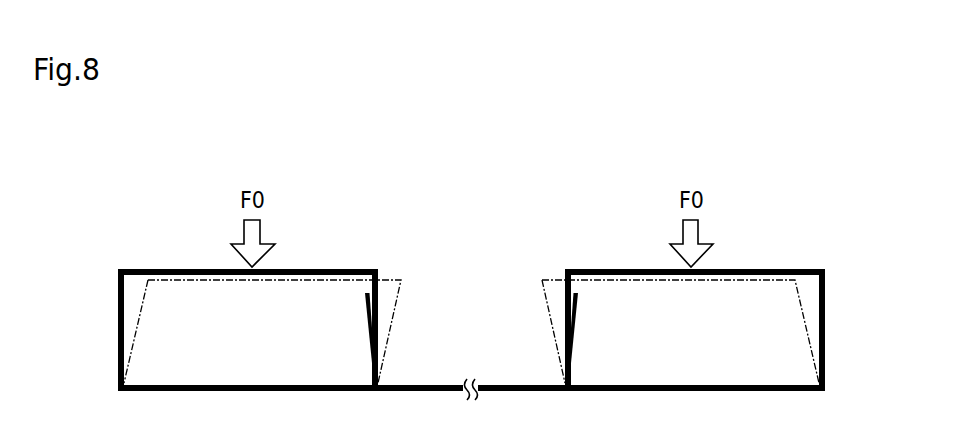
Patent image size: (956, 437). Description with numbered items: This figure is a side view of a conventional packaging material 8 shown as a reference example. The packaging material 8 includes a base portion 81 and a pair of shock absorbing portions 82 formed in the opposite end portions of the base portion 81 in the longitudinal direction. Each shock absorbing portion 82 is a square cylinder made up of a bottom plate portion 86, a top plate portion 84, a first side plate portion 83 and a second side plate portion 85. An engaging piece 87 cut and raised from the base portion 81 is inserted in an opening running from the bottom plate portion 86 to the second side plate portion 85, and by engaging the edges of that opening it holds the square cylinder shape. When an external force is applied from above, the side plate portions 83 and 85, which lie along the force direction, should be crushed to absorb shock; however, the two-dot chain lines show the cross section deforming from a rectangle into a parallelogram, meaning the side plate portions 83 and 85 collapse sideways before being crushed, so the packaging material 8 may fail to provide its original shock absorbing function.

The packaging material 8 is at (752, 180).
The base portion 81 is at (525, 386).
The shock absorbing portion 82 is at (150, 250).
The first side plate portion 83 is at (118, 335).
The top plate portion 84 is at (325, 270).
The second side plate portion 85 is at (378, 304).
The bottom plate portion 86 is at (218, 385).
The engaging piece 87 is at (366, 340).